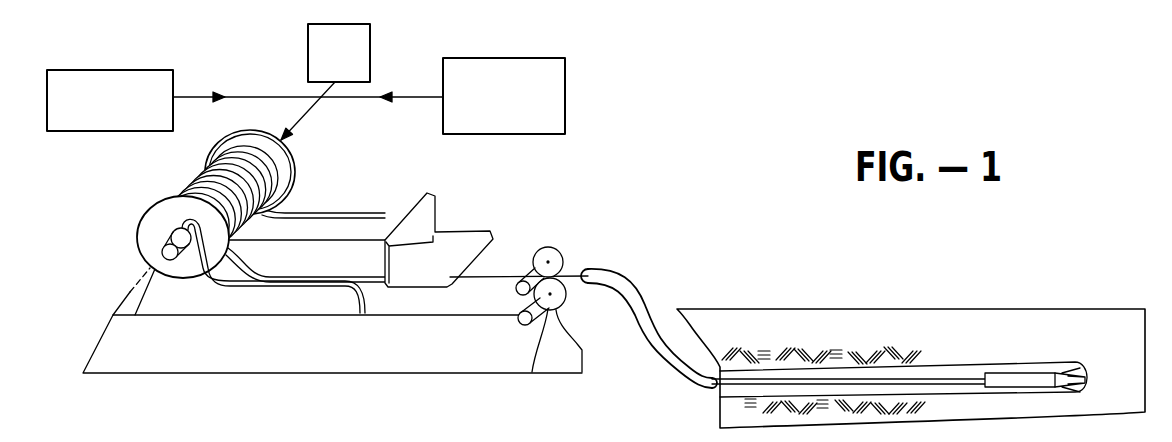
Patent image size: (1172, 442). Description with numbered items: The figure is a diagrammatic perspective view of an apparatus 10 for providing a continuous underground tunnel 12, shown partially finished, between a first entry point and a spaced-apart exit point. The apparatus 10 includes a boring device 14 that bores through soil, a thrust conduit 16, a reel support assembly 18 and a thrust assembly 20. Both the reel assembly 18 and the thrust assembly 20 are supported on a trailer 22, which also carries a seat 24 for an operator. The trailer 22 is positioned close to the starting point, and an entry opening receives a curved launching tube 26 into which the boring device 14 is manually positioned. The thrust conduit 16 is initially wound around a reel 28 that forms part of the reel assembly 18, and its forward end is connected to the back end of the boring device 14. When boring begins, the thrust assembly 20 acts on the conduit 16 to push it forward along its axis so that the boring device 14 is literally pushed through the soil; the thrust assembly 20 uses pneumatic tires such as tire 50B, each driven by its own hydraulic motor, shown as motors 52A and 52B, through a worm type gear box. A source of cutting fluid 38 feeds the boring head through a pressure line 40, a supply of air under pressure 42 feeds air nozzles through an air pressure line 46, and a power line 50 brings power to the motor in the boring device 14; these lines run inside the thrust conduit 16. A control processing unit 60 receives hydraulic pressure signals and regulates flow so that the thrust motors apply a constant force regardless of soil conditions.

The apparatus 10 is at (725, 95).
The tunnel 12 is at (720, 395).
The boring device 14 is at (1012, 370).
The thrust conduit 16 is at (880, 378).
The reel support assembly 18 is at (150, 170).
The thrust assembly 20 is at (585, 247).
The trailer 22 is at (100, 336).
The seat 24 is at (462, 235).
The curved launching tube 26 is at (633, 290).
The reel 28 is at (145, 228).
The source of cutting fluid 38 is at (107, 68).
The cutting fluid pressure line 40 is at (262, 96).
The supply of air under pressure 42 is at (365, 38).
The air pressure line 46 is at (310, 118).
The power line 50 is at (405, 100).
The pneumatic tire 50B is at (532, 365).
The hydraulic motor 52A is at (522, 280).
The hydraulic motor 52B is at (520, 322).
The control processing unit 60 is at (565, 84).